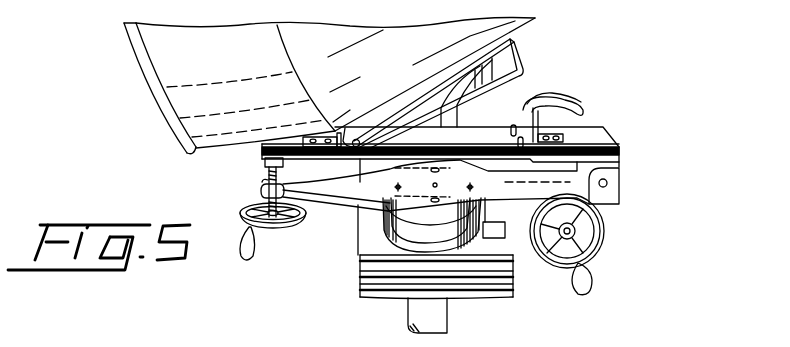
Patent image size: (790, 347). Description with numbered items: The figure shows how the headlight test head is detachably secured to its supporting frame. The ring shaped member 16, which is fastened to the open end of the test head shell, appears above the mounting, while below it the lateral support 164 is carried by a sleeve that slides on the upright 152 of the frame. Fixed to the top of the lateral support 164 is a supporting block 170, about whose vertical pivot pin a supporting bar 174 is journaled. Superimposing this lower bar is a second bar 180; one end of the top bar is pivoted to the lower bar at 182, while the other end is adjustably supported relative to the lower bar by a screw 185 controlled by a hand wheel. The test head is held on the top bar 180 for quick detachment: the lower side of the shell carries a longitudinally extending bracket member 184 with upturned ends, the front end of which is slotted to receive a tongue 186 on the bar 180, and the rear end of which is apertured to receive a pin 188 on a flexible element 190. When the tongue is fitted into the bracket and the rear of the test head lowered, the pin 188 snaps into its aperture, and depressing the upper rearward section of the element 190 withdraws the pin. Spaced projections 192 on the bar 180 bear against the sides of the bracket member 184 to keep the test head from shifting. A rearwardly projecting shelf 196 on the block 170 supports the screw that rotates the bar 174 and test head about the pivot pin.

The ring shaped member 16 is at (180, 101).
The upright 152 is at (433, 318).
The lateral support 164 is at (363, 295).
The supporting block 170 is at (387, 240).
The supporting bar 174 is at (354, 200).
The second bar 180 is at (600, 143).
The pivot 182 is at (610, 183).
The bracket member 184 is at (521, 57).
The screw 185 is at (262, 182).
The tongue 186 is at (362, 142).
The pin 188 is at (524, 103).
The flexible element 190 is at (565, 117).
The spaced projections 192 is at (516, 143).
The rearwardly projecting shelf 196 is at (516, 229).